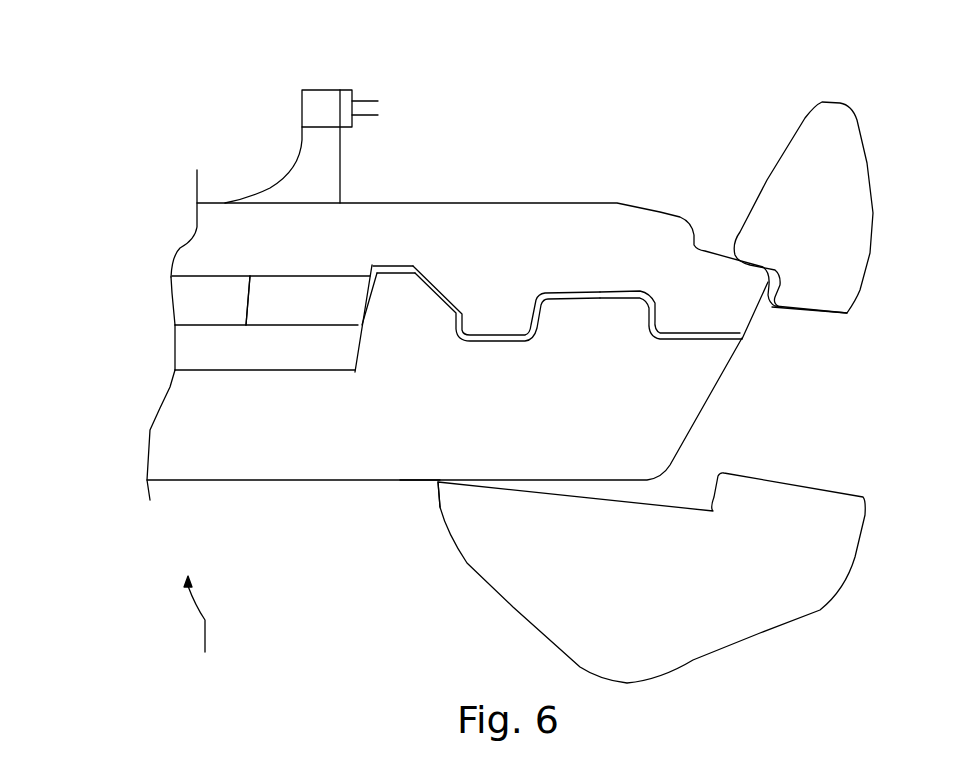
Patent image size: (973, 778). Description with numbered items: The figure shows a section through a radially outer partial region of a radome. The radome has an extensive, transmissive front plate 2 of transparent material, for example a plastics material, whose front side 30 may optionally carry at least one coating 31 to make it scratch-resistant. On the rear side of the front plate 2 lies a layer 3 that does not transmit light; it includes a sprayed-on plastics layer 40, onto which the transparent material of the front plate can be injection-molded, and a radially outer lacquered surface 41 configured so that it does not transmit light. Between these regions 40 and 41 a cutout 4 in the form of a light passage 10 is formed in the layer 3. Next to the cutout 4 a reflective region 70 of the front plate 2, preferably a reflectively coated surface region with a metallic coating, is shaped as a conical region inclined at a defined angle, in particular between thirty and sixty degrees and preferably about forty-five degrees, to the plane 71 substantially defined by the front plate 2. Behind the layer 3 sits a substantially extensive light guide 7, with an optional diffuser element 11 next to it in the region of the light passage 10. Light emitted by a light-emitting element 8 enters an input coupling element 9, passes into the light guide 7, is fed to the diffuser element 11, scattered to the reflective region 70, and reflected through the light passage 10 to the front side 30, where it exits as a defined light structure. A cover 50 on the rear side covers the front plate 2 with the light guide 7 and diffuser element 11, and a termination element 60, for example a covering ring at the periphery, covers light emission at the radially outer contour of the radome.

The front plate 2 is at (178, 445).
The layer that does not transmit light 3 is at (252, 340).
The cutout 4 is at (374, 322).
The light guide 7 is at (195, 297).
The light-emitting element 8 is at (324, 103).
The input coupling element 9 is at (322, 160).
The light passage 10 is at (378, 304).
The diffuser element 11 is at (310, 305).
The front side 30 is at (405, 483).
The coating 31 is at (426, 482).
The sprayed-on plastics layer 40 is at (185, 350).
The lacquered surface 41 is at (590, 290).
The cover 50 is at (507, 247).
The termination element 60 is at (850, 240).
The reflective region 70 is at (440, 297).
The plane 71 is at (319, 485).